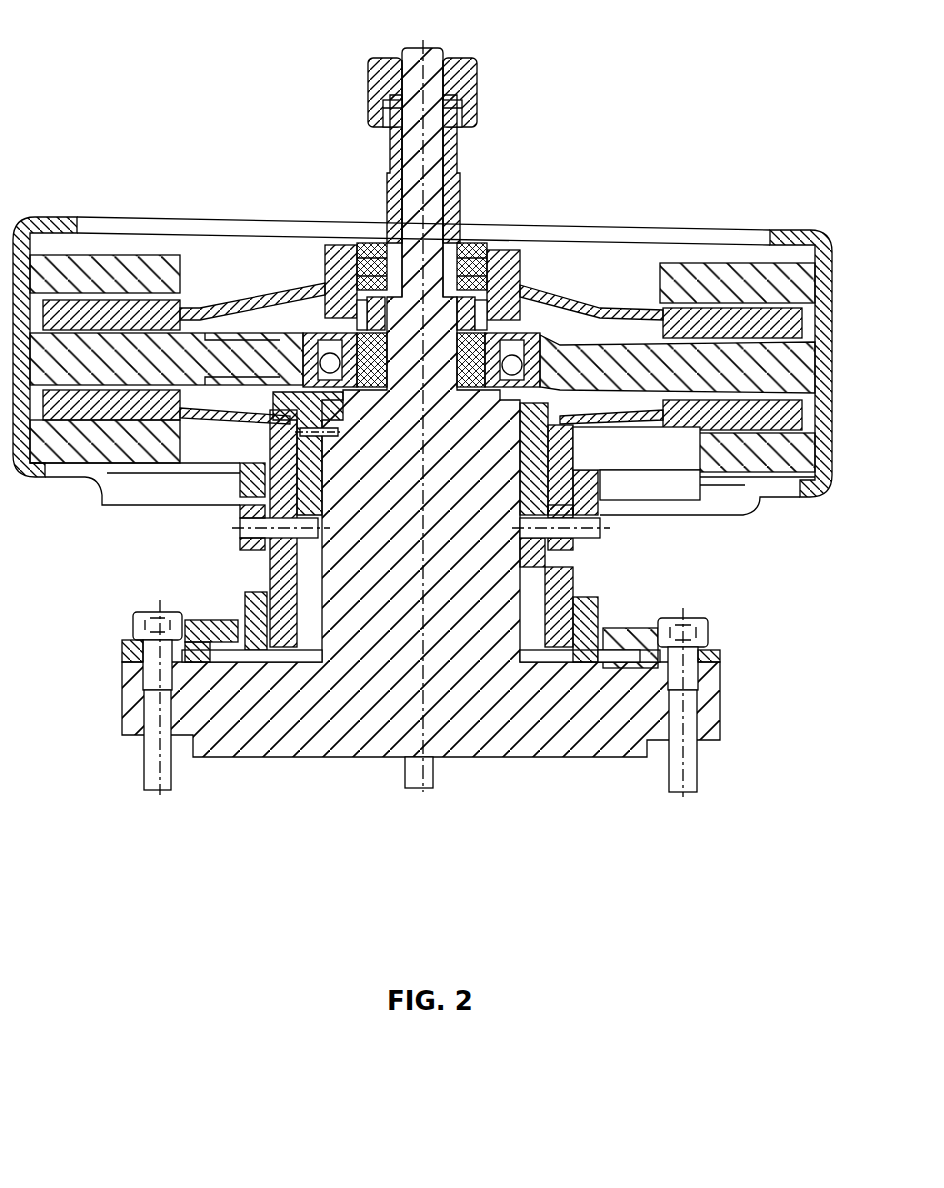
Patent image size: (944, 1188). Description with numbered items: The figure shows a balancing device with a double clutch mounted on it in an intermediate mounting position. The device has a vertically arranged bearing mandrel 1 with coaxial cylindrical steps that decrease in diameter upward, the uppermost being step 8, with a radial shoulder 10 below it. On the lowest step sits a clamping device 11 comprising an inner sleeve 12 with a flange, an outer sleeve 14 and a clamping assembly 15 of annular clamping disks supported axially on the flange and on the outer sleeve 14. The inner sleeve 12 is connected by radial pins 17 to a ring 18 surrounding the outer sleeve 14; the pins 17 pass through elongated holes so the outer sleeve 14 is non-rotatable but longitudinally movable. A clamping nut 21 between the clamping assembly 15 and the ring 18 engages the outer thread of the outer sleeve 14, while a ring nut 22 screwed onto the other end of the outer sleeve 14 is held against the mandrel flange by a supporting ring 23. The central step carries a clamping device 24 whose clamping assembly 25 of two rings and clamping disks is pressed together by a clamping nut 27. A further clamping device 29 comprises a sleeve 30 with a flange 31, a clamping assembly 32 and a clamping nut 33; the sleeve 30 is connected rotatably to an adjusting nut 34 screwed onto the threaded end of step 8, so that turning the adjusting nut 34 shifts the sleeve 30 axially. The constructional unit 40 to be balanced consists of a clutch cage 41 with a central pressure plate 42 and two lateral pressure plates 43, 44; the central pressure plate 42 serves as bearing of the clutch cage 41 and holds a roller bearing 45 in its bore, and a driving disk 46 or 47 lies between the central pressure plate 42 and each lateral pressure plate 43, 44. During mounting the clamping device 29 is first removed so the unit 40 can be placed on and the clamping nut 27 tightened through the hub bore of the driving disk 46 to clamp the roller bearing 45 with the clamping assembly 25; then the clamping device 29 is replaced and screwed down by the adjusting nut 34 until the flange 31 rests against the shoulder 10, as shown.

The bearing mandrel 1 is at (372, 758).
The step 8 is at (390, 138).
The radial shoulder 10 is at (345, 300).
The clamping device 11 is at (608, 436).
The inner sleeve 12 is at (545, 560).
The outer sleeve 14 is at (270, 580).
The clamping assembly 15 is at (233, 466).
The radial pins 17 is at (240, 528).
The ring 18 is at (240, 548).
The clamping nut 21 is at (600, 490).
The ring nut 22 is at (600, 612).
The supporting ring 23 is at (720, 648).
The clamping device 24 is at (376, 255).
The clamping assembly 25 is at (322, 333).
The clamping nut 27 is at (370, 333).
The clamping device 29 is at (460, 205).
The sleeve 30 is at (460, 143).
The flange 31 is at (470, 300).
The clamping assembly 32 is at (482, 300).
The clamping nut 33 is at (368, 243).
The adjusting nut 34 is at (472, 58).
The constructional unit 40 is at (690, 230).
The clutch cage 41 is at (790, 232).
The central pressure plate 42 is at (800, 368).
The lateral pressure plate 43 is at (805, 285).
The lateral pressure plate 44 is at (800, 458).
The roller bearing 45 is at (565, 300).
The driving disk 46 is at (800, 330).
The driving disk 47 is at (800, 415).